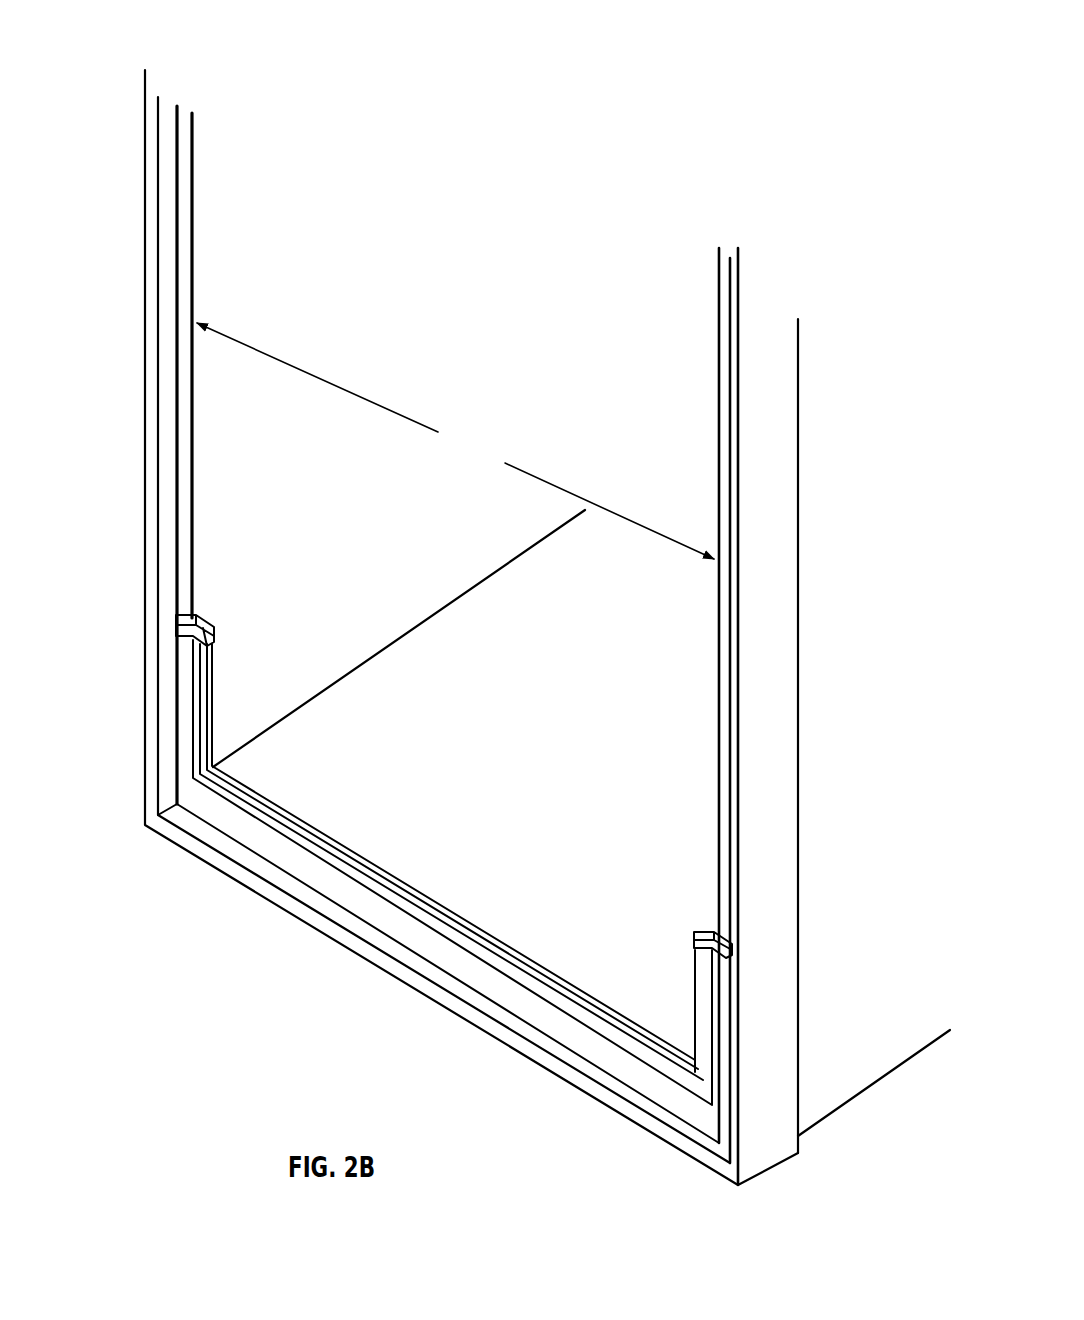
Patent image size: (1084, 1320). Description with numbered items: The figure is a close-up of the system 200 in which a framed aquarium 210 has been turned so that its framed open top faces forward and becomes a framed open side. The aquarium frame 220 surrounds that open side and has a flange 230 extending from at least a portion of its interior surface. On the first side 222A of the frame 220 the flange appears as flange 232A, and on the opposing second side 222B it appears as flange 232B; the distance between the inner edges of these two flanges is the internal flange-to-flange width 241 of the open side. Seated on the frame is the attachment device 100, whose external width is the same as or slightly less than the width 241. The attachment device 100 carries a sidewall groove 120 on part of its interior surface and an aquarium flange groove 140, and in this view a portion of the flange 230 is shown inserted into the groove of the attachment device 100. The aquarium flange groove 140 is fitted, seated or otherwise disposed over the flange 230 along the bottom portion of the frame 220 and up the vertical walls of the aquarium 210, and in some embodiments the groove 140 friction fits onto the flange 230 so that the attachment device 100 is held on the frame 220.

The system 200 is at (878, 43).
The frame 220 is at (146, 245).
The first side of the aquarium frame 222A is at (160, 530).
The second side of the aquarium frame 222B is at (786, 898).
The framed aquarium 210 is at (874, 1087).
The flange 230 is at (197, 203).
The flange on the first side 232A is at (197, 410).
The flange on the second side 232B is at (720, 700).
The internal flange-to-flange width 241 is at (455, 441).
The attachment device 100 is at (375, 855).
The sidewall groove 120 is at (481, 937).
The aquarium flange groove 140 is at (176, 622).